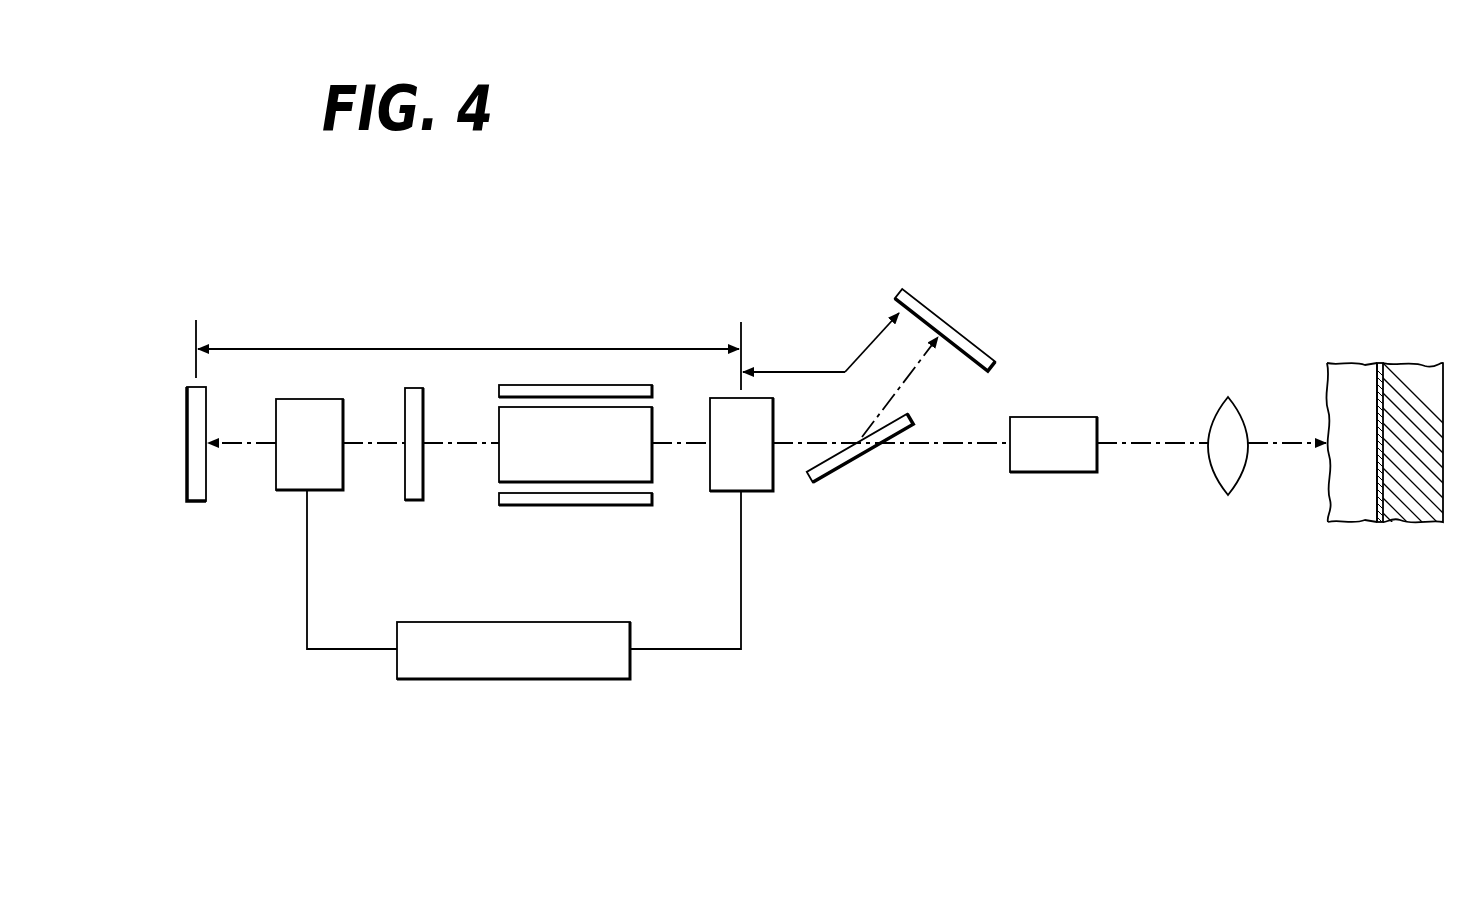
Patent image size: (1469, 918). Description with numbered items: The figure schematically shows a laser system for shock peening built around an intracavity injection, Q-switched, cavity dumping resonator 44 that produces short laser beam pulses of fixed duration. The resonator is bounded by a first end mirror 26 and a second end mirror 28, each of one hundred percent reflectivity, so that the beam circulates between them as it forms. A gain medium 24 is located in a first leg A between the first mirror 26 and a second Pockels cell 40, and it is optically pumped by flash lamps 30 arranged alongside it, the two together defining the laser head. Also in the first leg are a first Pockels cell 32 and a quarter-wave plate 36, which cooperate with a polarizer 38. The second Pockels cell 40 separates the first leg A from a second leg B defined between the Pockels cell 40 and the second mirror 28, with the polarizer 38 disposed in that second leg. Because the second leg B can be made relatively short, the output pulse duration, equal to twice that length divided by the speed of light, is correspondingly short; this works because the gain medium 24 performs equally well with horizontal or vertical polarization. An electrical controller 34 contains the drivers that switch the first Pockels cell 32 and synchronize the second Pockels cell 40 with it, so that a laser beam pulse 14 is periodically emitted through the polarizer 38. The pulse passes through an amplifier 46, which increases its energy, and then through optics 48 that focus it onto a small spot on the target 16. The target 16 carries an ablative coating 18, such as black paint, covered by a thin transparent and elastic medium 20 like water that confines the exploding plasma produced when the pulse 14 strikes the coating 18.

The laser beam pulse 14 is at (1270, 447).
The target 16 is at (1407, 365).
The ablative coating 18 is at (1378, 363).
The transparent and elastic medium 20 is at (1347, 363).
The gain medium 24 is at (499, 415).
The first end mirror 26 is at (187, 400).
The second end mirror 28 is at (967, 338).
The flash lamps 30 is at (538, 388).
The first Pockels cell 32 is at (283, 483).
The electrical controller 34 is at (470, 672).
The quarter-wave plate 36 is at (410, 493).
The polarizer 38 is at (840, 465).
The second Pockels cell 40 is at (765, 472).
The cavity dumping resonator 44 is at (622, 286).
The amplifier 46 is at (1053, 470).
The optics 48 is at (1222, 418).
The first leg A is at (365, 349).
The second leg B is at (868, 345).